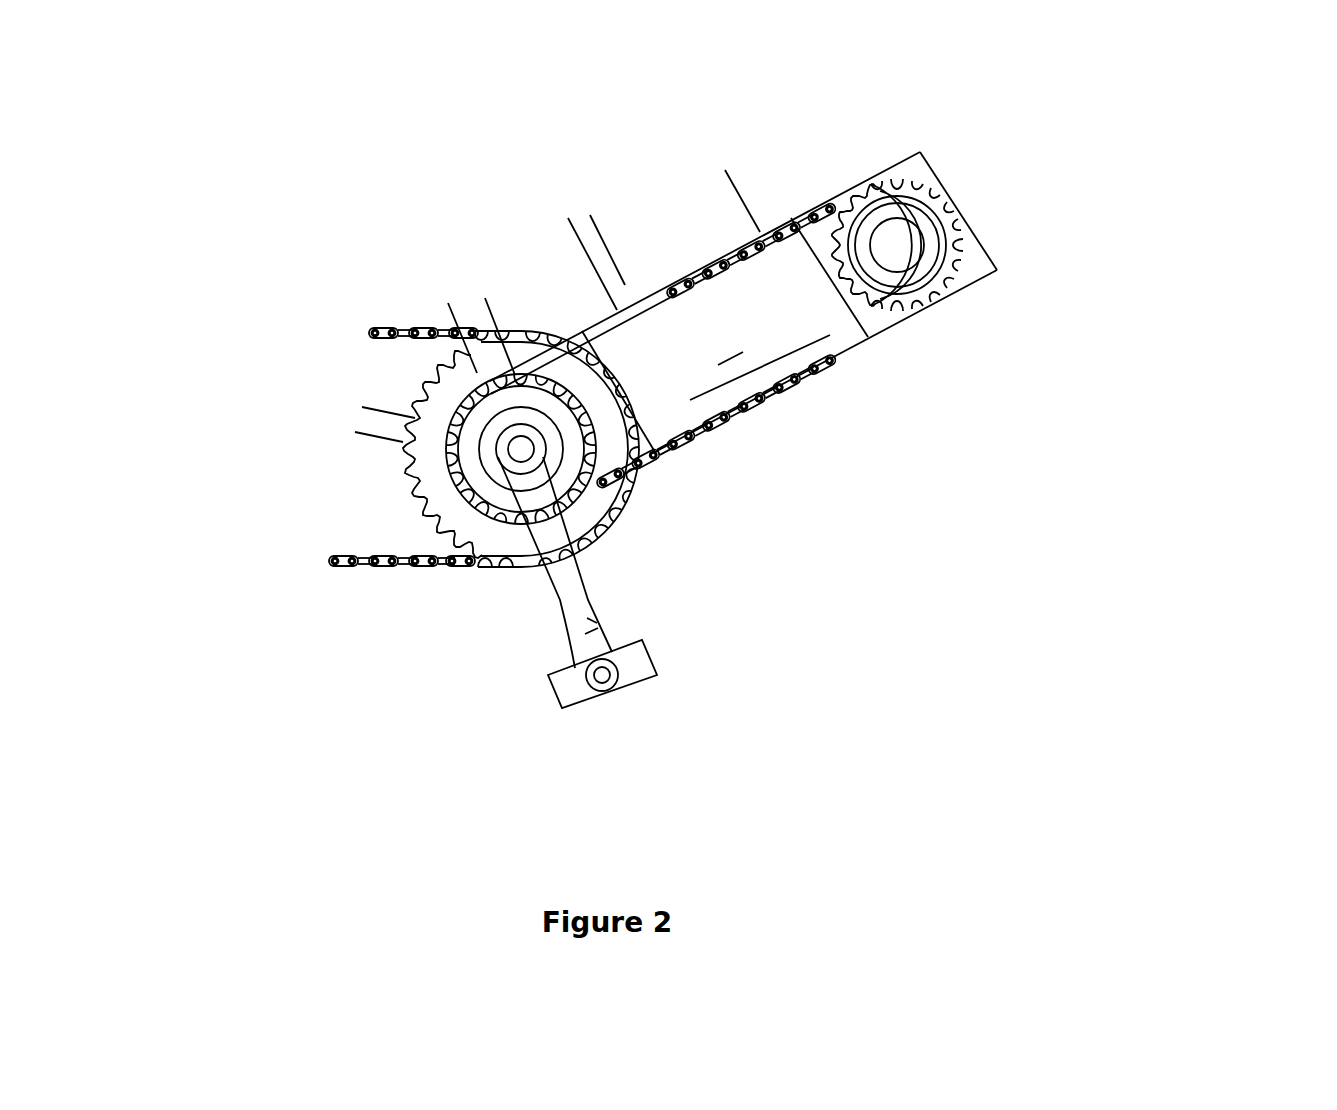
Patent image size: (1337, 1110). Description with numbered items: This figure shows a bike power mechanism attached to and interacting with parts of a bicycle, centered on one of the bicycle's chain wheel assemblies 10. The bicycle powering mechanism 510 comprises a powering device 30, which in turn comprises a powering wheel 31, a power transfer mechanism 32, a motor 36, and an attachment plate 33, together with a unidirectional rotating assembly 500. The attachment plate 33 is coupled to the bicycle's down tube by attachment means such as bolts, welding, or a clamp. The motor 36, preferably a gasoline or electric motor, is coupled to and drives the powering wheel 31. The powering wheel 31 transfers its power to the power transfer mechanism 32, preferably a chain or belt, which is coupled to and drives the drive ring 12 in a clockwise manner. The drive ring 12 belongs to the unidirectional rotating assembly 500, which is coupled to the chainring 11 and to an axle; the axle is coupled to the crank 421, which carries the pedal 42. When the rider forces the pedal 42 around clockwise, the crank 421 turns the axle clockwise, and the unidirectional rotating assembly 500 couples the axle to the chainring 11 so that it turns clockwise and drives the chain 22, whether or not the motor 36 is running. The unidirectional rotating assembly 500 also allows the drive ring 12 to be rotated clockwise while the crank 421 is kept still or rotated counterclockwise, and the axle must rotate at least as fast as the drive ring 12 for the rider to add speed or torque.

The chain wheel assembly 10 is at (475, 613).
The chainring 11 is at (440, 400).
The drive ring 12 is at (460, 473).
The chain 22 is at (410, 565).
The powering device 30 is at (885, 168).
The powering wheel 31 is at (950, 237).
The power transfer mechanism 32 is at (850, 348).
The attachment plate 33 is at (693, 215).
The motor 36 is at (753, 312).
The pedal 42 is at (652, 658).
The crank 421 is at (583, 606).
The unidirectional rotating assembly 500 is at (445, 272).
The bicycle powering mechanism 510 is at (1036, 330).